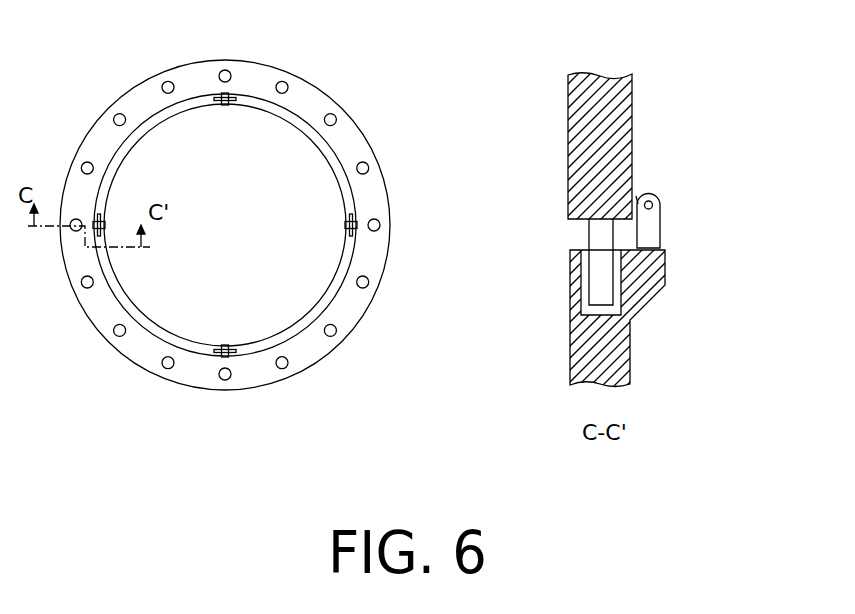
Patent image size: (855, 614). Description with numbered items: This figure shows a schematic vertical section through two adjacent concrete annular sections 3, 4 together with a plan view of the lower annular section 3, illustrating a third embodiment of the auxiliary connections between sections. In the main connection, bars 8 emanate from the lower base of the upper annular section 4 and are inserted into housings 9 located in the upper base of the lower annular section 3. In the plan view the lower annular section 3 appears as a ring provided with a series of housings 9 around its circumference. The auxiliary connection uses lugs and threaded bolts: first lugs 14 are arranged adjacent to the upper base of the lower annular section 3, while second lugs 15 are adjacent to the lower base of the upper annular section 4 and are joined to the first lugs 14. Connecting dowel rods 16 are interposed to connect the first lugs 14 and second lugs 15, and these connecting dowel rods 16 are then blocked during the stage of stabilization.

The annular section 3 is at (323, 157).
The annular section 4 is at (313, 106).
The bar 8 is at (602, 230).
The housing 9 is at (286, 83).
The first lug 14 is at (357, 240).
The second lug 15 is at (354, 217).
The connecting dowel rod 16 is at (232, 354).